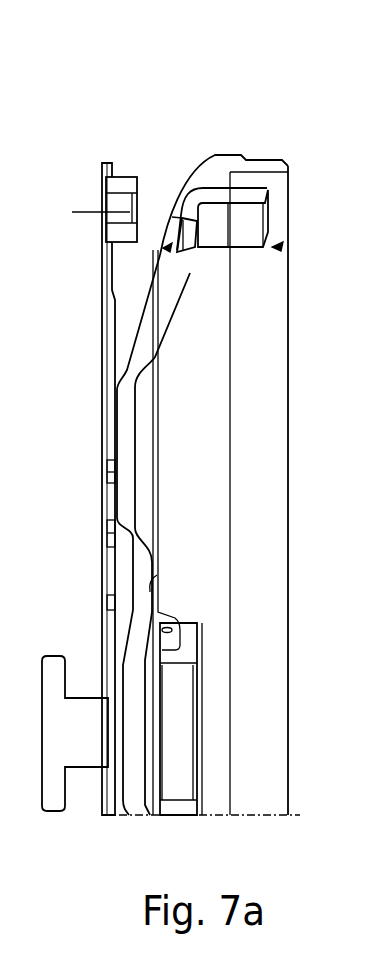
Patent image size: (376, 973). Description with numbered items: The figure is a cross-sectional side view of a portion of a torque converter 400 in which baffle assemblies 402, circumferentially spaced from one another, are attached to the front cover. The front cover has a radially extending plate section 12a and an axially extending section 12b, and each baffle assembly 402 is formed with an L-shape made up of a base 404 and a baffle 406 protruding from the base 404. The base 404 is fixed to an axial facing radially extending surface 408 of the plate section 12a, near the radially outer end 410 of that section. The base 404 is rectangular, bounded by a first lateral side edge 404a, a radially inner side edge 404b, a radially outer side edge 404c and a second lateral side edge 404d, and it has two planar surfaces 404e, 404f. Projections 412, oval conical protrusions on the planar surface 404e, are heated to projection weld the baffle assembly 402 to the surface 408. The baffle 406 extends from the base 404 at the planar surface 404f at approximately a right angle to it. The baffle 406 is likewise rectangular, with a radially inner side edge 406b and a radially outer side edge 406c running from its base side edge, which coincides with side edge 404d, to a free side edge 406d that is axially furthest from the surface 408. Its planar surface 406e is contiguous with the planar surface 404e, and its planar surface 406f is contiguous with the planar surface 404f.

The torque converter 400 is at (283, 138).
The radially outer end 410 is at (172, 89).
The axially extending section 12b is at (248, 168).
The radially extending plate section 12a is at (140, 543).
The base 404 is at (130, 247).
The first lateral side edge 404a is at (163, 247).
The radially inner side edge 404b is at (186, 262).
The radially outer side edge 404c is at (172, 212).
The second lateral side edge 404d is at (185, 210).
The planar surface 404e is at (79, 215).
The planar surface 404f is at (232, 238).
The baffle 406 is at (253, 217).
The radially inner side edge 406b is at (243, 248).
The radially outer side edge 406c is at (252, 197).
The free side edge 406d is at (275, 247).
The planar surface 406e is at (260, 181).
The planar surface 406f is at (236, 242).
The baffle assembly 402 is at (269, 228).
The radially extending surface 408 is at (112, 200).
The projections 412 is at (178, 268).